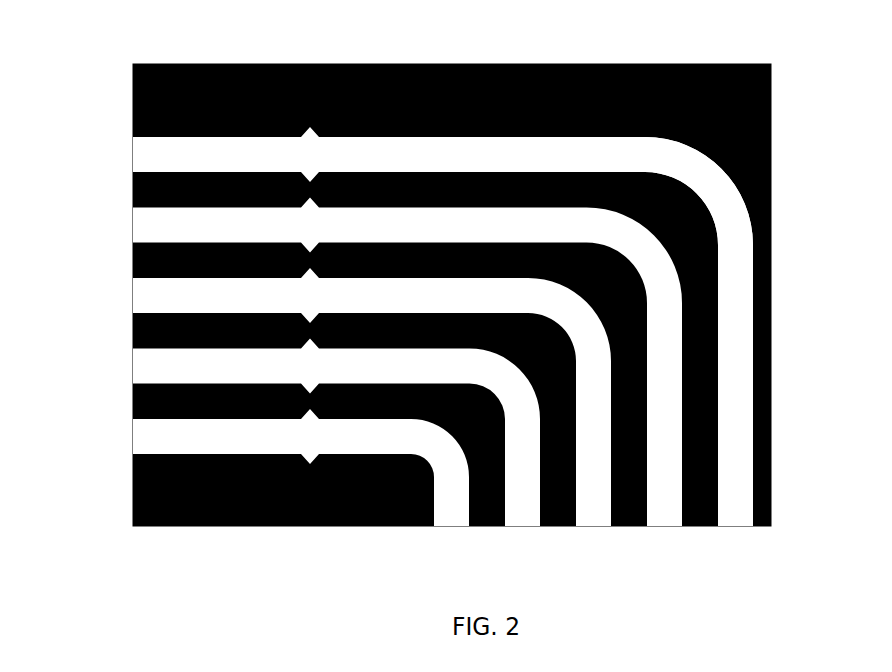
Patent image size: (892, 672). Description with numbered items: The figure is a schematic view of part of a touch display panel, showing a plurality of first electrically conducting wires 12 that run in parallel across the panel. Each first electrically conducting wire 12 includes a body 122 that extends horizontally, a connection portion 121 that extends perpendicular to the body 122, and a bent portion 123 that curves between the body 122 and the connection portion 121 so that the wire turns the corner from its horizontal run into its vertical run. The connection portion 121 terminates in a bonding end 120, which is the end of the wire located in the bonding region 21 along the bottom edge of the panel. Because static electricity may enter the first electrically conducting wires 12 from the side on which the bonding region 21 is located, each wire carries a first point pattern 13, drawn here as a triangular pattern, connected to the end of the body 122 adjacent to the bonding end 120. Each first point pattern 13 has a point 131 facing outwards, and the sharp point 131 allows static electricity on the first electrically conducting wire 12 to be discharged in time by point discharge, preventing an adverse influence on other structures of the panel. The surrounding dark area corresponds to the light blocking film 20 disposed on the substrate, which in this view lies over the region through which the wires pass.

The first electrically conducting wire 12 is at (112, 167).
The first point pattern 13 is at (298, 63).
The point 131 is at (277, 172).
The body 122 is at (402, 63).
The bent portion 123 is at (688, 191).
The connection portion 121 is at (737, 385).
The bonding end 120 is at (591, 558).
The light blocking film 20 is at (630, 63).
The bonding region 21 is at (700, 520).